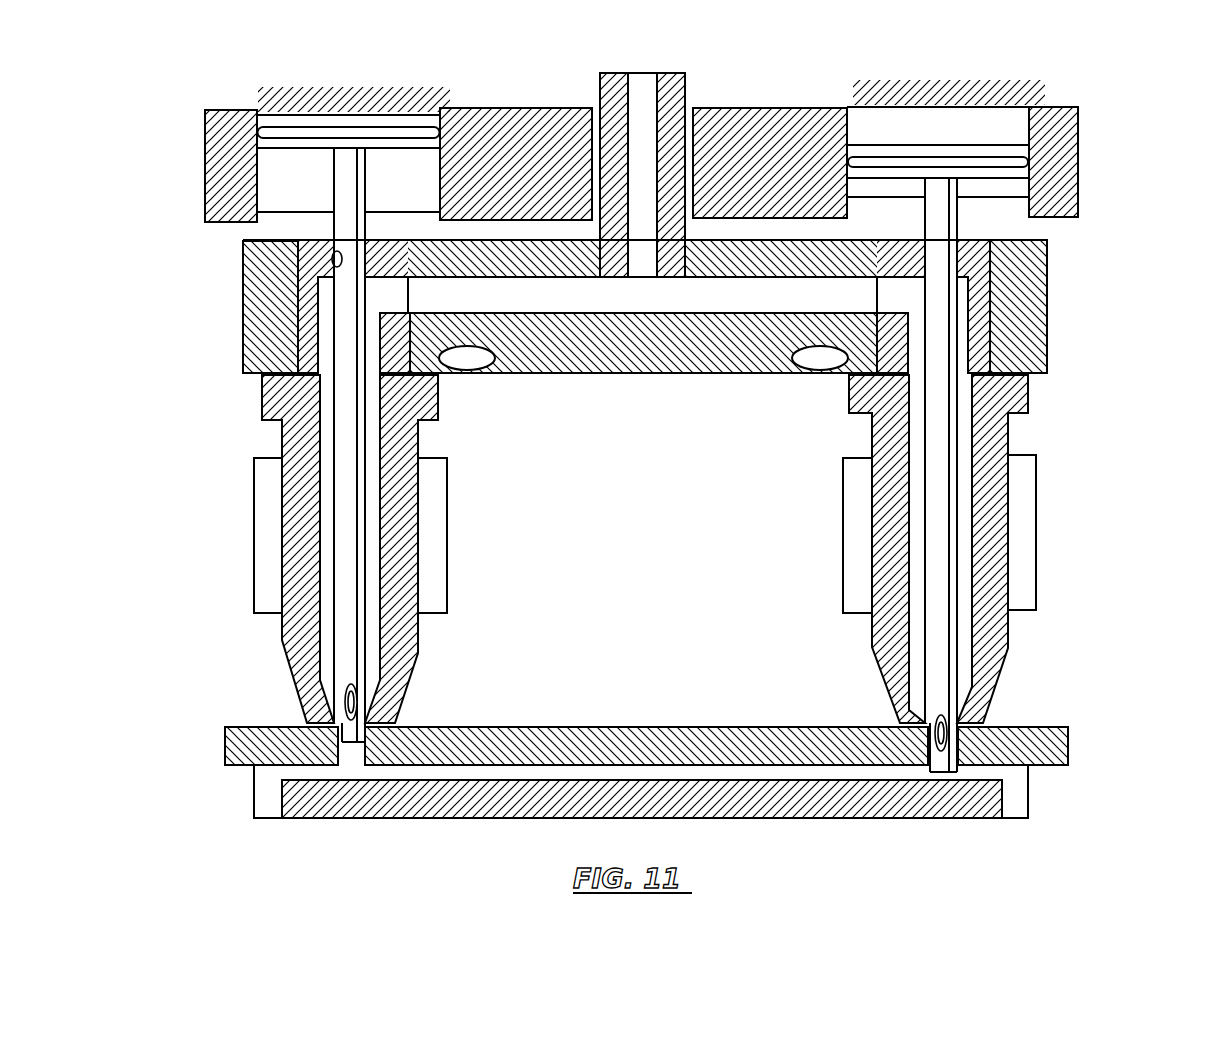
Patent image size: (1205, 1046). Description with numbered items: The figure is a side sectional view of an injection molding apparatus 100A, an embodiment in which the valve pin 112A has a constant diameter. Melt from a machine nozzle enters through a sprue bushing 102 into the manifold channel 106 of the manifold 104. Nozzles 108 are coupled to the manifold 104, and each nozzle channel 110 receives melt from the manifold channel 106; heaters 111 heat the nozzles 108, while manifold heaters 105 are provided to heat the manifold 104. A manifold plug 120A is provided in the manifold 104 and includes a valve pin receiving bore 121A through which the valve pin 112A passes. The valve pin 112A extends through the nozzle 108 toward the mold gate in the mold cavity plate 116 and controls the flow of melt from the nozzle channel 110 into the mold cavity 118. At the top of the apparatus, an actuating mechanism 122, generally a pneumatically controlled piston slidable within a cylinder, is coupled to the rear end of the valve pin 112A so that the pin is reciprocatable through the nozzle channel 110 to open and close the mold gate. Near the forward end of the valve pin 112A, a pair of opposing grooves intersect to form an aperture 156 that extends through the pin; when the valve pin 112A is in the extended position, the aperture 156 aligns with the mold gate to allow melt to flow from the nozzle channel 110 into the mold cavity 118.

The injection molding apparatus 100A is at (1086, 254).
The sprue bushing 102 is at (673, 90).
The manifold 104 is at (1037, 323).
The manifold heaters 105 is at (490, 368).
The manifold channel 106 is at (662, 306).
The nozzle 108 is at (988, 578).
The nozzle channel 110 is at (914, 624).
The heater 111 is at (850, 500).
The valve pin 112A is at (937, 428).
The mold cavity plate 116 is at (1038, 726).
The mold cavity 118 is at (262, 788).
The manifold plug 120A is at (302, 348).
The valve pin receiving bore 121A is at (332, 259).
The actuating mechanism 122 is at (444, 84).
The aperture 156 is at (346, 700).